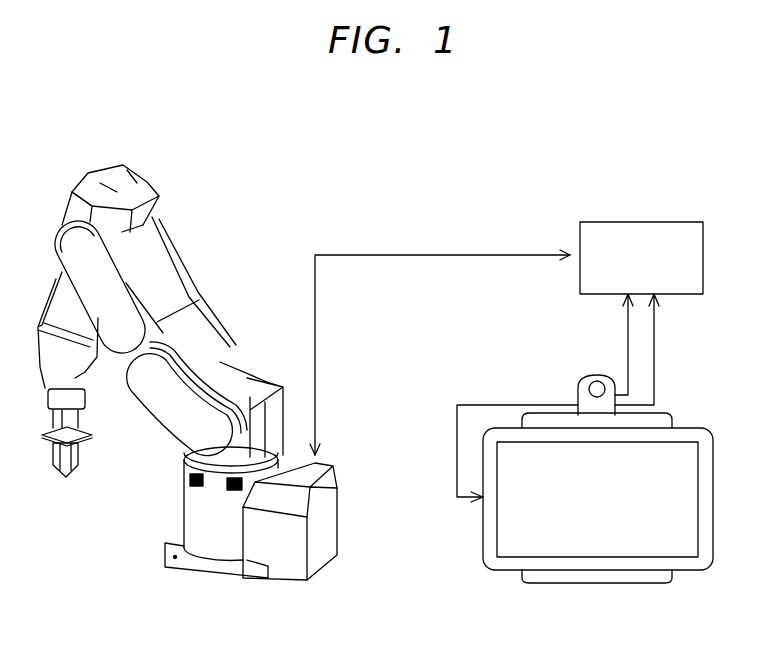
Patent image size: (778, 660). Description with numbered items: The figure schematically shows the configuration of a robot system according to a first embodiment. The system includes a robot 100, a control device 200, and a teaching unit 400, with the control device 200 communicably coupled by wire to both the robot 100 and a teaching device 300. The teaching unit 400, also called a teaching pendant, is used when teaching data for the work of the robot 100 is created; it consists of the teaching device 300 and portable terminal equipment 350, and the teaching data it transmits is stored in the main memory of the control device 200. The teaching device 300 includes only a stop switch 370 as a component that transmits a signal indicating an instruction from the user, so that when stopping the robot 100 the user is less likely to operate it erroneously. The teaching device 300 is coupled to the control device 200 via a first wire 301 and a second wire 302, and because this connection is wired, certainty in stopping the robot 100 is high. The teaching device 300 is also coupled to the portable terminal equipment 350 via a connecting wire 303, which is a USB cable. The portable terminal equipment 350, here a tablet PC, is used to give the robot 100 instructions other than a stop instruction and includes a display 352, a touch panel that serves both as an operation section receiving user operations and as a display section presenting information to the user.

The robot 100 is at (185, 262).
The control device 200 is at (602, 220).
The first wire 301 is at (628, 357).
The second wire 302 is at (653, 366).
The connecting wire 303 is at (460, 472).
The stop switch 370 is at (577, 387).
The teaching unit 400 is at (403, 555).
The teaching device 300 is at (530, 583).
The portable terminal equipment 350 is at (483, 555).
The display 352 is at (683, 533).